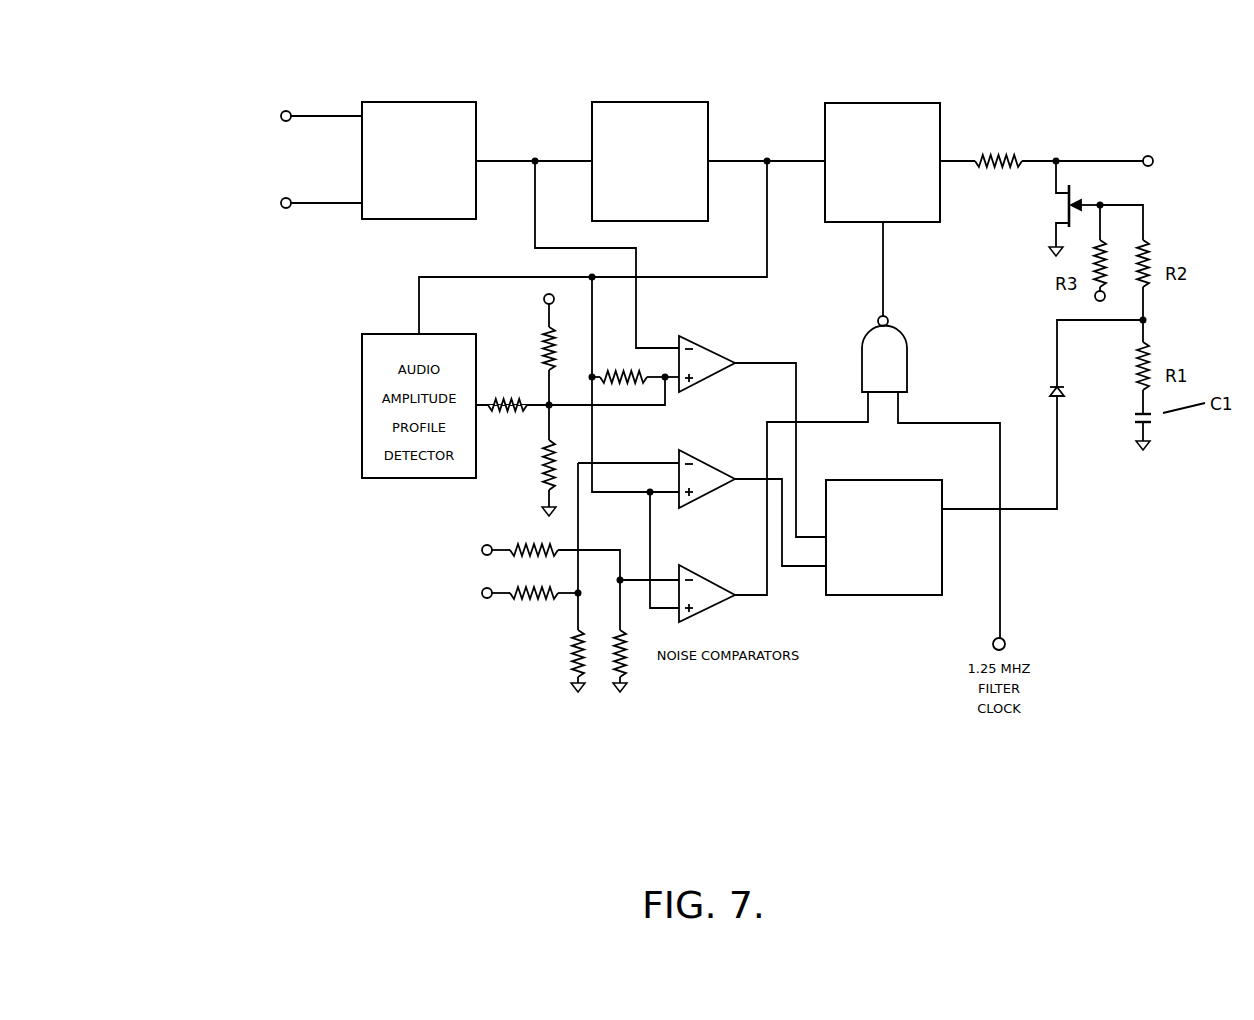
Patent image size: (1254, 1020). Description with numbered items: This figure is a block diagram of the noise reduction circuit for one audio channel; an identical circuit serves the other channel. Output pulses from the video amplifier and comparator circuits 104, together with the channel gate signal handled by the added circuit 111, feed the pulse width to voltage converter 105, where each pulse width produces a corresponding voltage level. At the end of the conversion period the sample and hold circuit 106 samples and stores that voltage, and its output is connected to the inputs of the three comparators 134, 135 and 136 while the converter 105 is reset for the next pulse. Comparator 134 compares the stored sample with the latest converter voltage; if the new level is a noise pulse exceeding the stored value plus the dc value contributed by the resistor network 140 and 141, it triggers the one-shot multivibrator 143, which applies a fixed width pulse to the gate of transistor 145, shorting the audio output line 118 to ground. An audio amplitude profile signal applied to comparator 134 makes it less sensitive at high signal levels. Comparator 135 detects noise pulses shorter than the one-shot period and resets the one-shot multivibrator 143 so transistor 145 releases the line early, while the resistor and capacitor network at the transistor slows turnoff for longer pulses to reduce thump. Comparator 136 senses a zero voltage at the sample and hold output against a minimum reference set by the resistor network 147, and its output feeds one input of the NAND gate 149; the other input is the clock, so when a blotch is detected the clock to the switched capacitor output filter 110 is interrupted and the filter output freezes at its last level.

The video amplifier and comparator circuits 104 is at (256, 212).
The pulse width to voltage converter 105 is at (410, 93).
The sample and hold circuit 106 is at (660, 93).
The switched capacitor output filter 110 is at (891, 95).
The channel gate circuit 111 is at (276, 100).
The audio output line 118 is at (1177, 142).
The comparator 134 is at (712, 343).
The comparator 135 is at (713, 462).
The comparator 136 is at (723, 573).
The resistor network 140 is at (535, 347).
The resistor network 141 is at (535, 467).
The one-shot multivibrator 143 is at (950, 518).
The transistor 145 is at (1057, 205).
The resistor network 147 is at (560, 610).
The NAND gate 149 is at (908, 367).